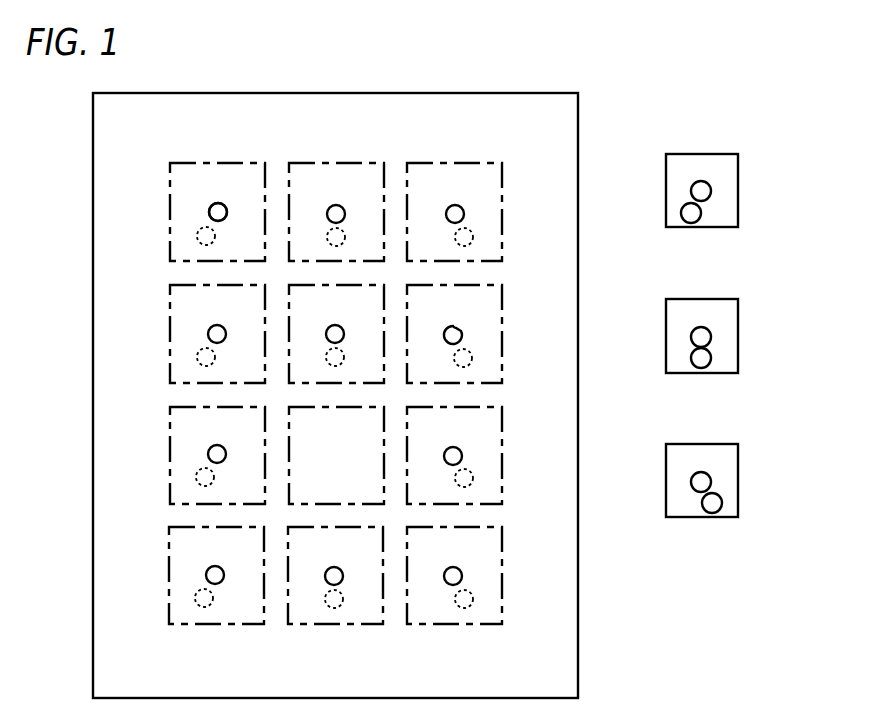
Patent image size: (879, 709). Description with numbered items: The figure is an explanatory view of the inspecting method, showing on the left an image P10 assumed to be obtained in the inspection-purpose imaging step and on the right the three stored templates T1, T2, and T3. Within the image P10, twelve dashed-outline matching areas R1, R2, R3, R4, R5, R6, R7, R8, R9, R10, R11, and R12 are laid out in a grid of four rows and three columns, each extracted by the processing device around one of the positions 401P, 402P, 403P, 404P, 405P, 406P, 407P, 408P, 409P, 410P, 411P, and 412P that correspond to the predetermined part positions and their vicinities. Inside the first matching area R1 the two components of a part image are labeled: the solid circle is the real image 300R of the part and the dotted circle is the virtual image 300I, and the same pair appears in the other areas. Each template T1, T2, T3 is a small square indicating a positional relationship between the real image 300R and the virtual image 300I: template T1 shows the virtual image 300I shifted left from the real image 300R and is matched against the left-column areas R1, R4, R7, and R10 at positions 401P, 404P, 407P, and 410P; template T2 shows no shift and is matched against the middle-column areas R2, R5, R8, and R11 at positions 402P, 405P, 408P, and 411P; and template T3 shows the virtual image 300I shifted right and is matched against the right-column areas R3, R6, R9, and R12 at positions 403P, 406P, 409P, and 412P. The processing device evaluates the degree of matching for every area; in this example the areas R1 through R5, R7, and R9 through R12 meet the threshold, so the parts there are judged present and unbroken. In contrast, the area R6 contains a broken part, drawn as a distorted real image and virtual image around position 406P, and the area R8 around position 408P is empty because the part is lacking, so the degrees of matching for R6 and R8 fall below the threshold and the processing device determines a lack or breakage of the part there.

The image P10 is at (100, 105).
The matching area R1 is at (220, 163).
The matching area R2 is at (365, 162).
The matching area R3 is at (488, 162).
The matching area R4 is at (170, 340).
The matching area R5 is at (307, 285).
The matching area R6 is at (502, 330).
The matching area R7 is at (170, 475).
The matching area R8 is at (304, 504).
The matching area R9 is at (502, 452).
The matching area R10 is at (216, 624).
The matching area R11 is at (343, 625).
The matching area R12 is at (473, 625).
The position 401P is at (210, 204).
The position 402P is at (345, 195).
The position 403P is at (465, 199).
The position 404P is at (217, 326).
The position 405P is at (336, 318).
The position 406P is at (447, 327).
The position 407P is at (211, 445).
The position 408P is at (337, 457).
The position 409P is at (456, 446).
The position 410P is at (216, 566).
The position 411P is at (338, 557).
The position 412P is at (458, 567).
The real image 300R is at (209, 212).
The virtual image 300I is at (197, 236).
The template T1 is at (738, 160).
The template T2 is at (738, 307).
The template T3 is at (738, 452).